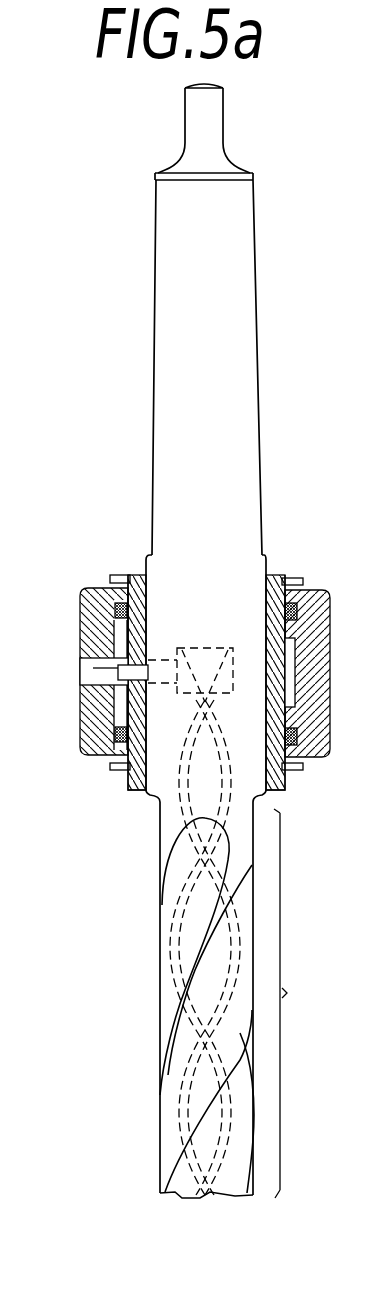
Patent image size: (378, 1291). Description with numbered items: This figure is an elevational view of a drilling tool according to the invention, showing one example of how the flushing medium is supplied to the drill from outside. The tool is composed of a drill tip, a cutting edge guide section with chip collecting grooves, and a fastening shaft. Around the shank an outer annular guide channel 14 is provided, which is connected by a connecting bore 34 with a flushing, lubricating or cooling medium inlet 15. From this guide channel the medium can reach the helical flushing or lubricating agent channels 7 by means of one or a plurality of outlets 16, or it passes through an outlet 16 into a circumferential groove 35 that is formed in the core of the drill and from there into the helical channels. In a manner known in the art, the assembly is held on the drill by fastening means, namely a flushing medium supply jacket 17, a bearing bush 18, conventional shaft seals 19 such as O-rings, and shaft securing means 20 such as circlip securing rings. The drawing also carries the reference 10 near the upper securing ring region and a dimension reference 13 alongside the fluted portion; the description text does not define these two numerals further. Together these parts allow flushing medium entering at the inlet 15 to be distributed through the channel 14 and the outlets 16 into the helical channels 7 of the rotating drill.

The helical flushing or lubricating agent channels 7 is at (200, 1060).
The retaining ring 10 is at (120, 578).
The flute length 13 is at (298, 1003).
The outer annular guide channel 14 is at (83, 707).
The medium inlet 15 is at (93, 668).
The outlet 16 is at (160, 660).
The flushing medium supply jacket 17 is at (86, 754).
The bearing bush 18 is at (137, 577).
The shaft seals 19 is at (97, 587).
The shaft securing means 20 is at (122, 770).
The connecting bore 34 is at (86, 623).
The circumferential groove 35 is at (228, 650).